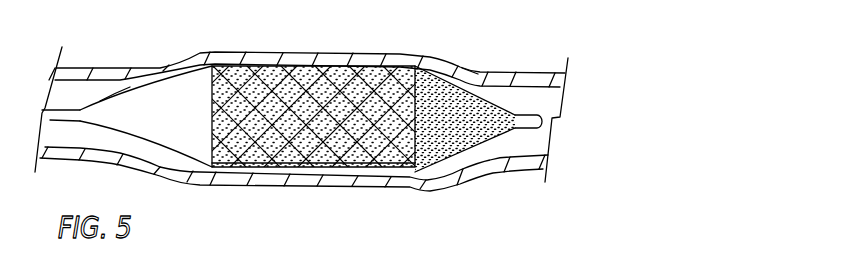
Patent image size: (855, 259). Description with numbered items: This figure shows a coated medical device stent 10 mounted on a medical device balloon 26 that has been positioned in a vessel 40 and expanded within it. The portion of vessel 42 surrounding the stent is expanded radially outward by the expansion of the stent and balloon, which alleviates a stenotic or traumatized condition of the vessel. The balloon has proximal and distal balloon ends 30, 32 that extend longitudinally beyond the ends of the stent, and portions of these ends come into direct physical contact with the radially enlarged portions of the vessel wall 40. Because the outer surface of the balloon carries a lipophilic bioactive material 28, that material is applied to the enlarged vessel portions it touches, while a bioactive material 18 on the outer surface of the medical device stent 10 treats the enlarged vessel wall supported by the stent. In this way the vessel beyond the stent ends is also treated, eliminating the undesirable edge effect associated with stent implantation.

The medical device stent 10 is at (292, 111).
The bioactive material 18 is at (298, 68).
The medical device balloon 26 is at (463, 82).
The lipophilic bioactive material 28 is at (120, 122).
The proximal balloon end 30 is at (472, 77).
The distal balloon end 32 is at (133, 85).
The vessel 40 is at (500, 70).
The expanded portion of vessel 42 is at (258, 62).